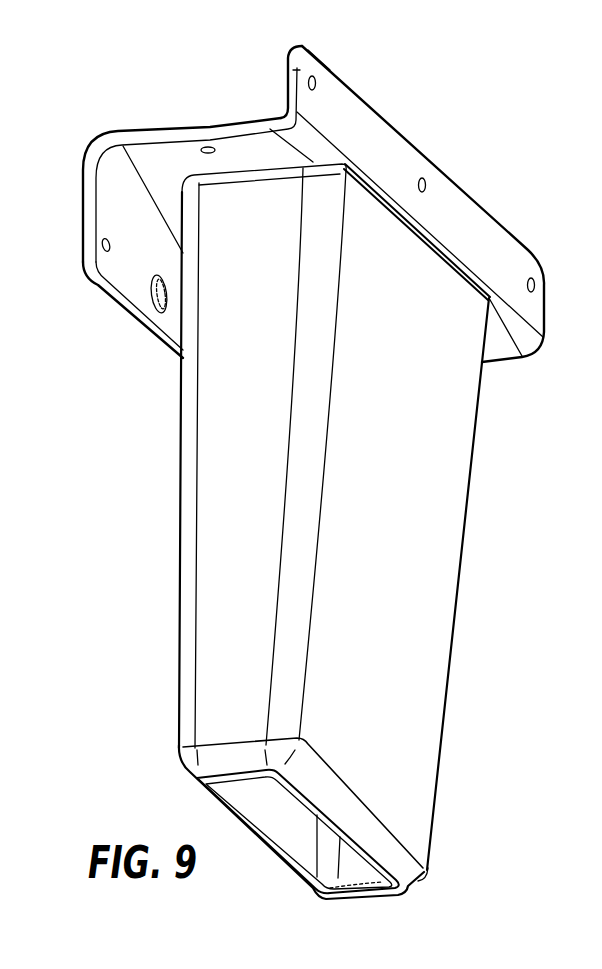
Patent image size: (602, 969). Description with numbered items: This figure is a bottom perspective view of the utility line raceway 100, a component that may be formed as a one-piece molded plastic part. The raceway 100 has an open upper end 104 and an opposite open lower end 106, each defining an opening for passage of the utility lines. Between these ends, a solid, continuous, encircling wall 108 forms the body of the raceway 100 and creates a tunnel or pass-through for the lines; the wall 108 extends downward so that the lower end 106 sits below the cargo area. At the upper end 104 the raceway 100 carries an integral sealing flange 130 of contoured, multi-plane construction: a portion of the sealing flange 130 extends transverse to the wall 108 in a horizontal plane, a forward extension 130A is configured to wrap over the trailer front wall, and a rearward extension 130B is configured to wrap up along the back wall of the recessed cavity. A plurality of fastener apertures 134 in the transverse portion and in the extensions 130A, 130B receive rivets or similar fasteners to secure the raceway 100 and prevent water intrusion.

The utility line raceway 100 is at (520, 136).
The upper end 104 is at (240, 110).
The lower end 106 is at (354, 904).
The wall 108 is at (237, 503).
The sealing flange 130 is at (163, 118).
The forward extension 130A is at (88, 192).
The rearward extension 130B is at (375, 132).
The fastener apertures 134 is at (320, 80).